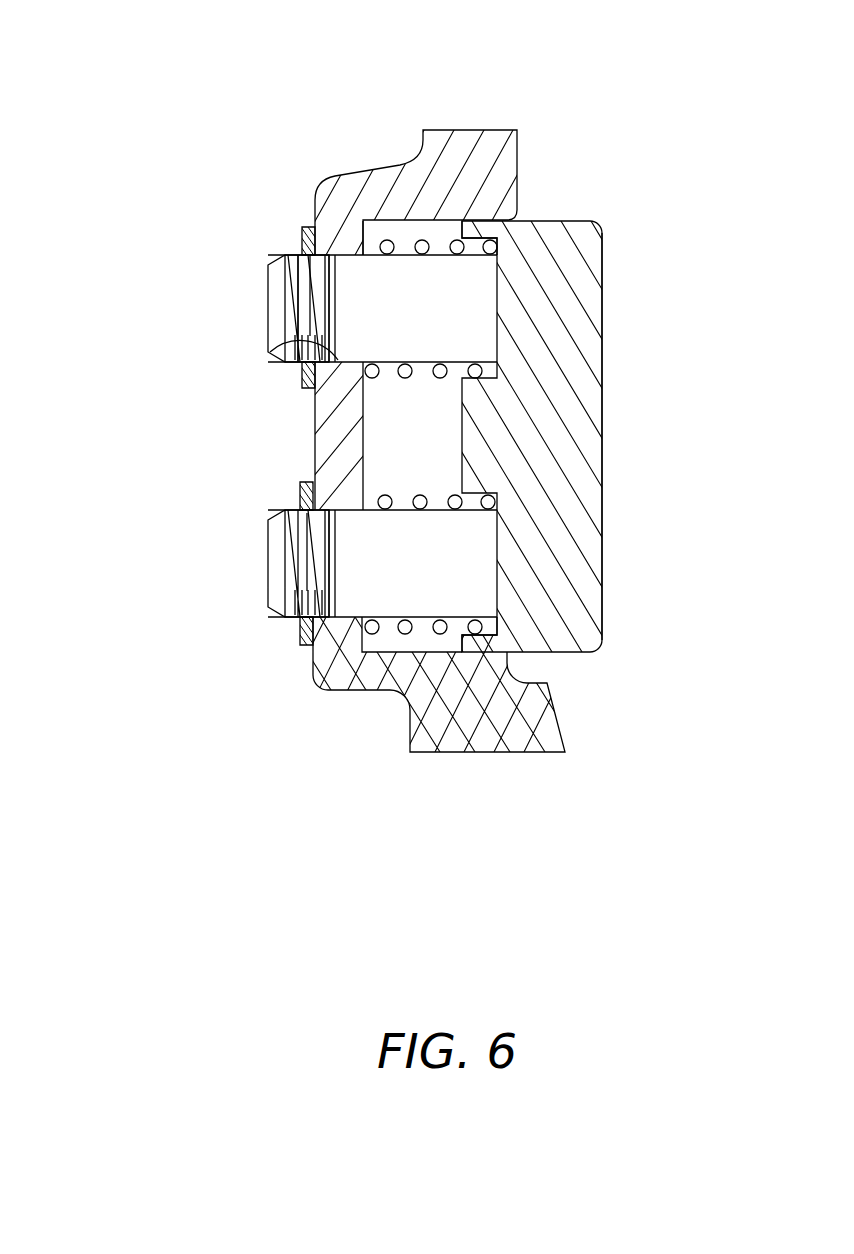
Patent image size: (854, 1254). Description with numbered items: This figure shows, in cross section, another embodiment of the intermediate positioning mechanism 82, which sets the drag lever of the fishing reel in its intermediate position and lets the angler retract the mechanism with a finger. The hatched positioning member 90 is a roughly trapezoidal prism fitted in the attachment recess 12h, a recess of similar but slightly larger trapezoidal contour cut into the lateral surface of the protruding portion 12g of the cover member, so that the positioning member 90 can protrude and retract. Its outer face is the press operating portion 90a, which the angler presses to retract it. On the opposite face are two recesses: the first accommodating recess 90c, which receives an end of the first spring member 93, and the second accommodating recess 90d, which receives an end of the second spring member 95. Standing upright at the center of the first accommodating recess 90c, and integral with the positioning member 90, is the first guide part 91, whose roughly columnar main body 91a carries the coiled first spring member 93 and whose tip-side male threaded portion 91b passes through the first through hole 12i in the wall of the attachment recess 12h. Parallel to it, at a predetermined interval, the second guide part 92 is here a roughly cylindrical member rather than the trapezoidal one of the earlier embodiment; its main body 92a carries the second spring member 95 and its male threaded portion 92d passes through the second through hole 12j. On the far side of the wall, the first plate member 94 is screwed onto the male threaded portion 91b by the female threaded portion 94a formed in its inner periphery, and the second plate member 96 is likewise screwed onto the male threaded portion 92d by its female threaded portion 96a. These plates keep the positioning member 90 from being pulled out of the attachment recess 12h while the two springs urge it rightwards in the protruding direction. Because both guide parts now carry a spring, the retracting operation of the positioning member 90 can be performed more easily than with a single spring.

The intermediate positioning mechanism 82 is at (572, 132).
The positioning member 90 is at (590, 182).
The press operating portion 90a is at (602, 380).
The first accommodating recess 90c is at (500, 263).
The second accommodating recess 90d is at (497, 517).
The first guide part 91 is at (260, 304).
The main body 91a is at (420, 273).
The male threaded portion 91b is at (292, 270).
The second guide part 92 is at (258, 557).
The main body 92a is at (368, 597).
The male threaded portion 92d is at (313, 617).
The first spring member 93 is at (457, 244).
The first plate member 94 is at (297, 223).
The female threaded portion 94a is at (310, 255).
The second spring member 95 is at (440, 627).
The second plate member 96 is at (293, 492).
The female threaded portion 96a is at (307, 513).
The protruding portion 12g is at (452, 162).
The attachment recess 12h is at (400, 240).
The first through hole 12i is at (272, 354).
The second through hole 12j is at (338, 614).